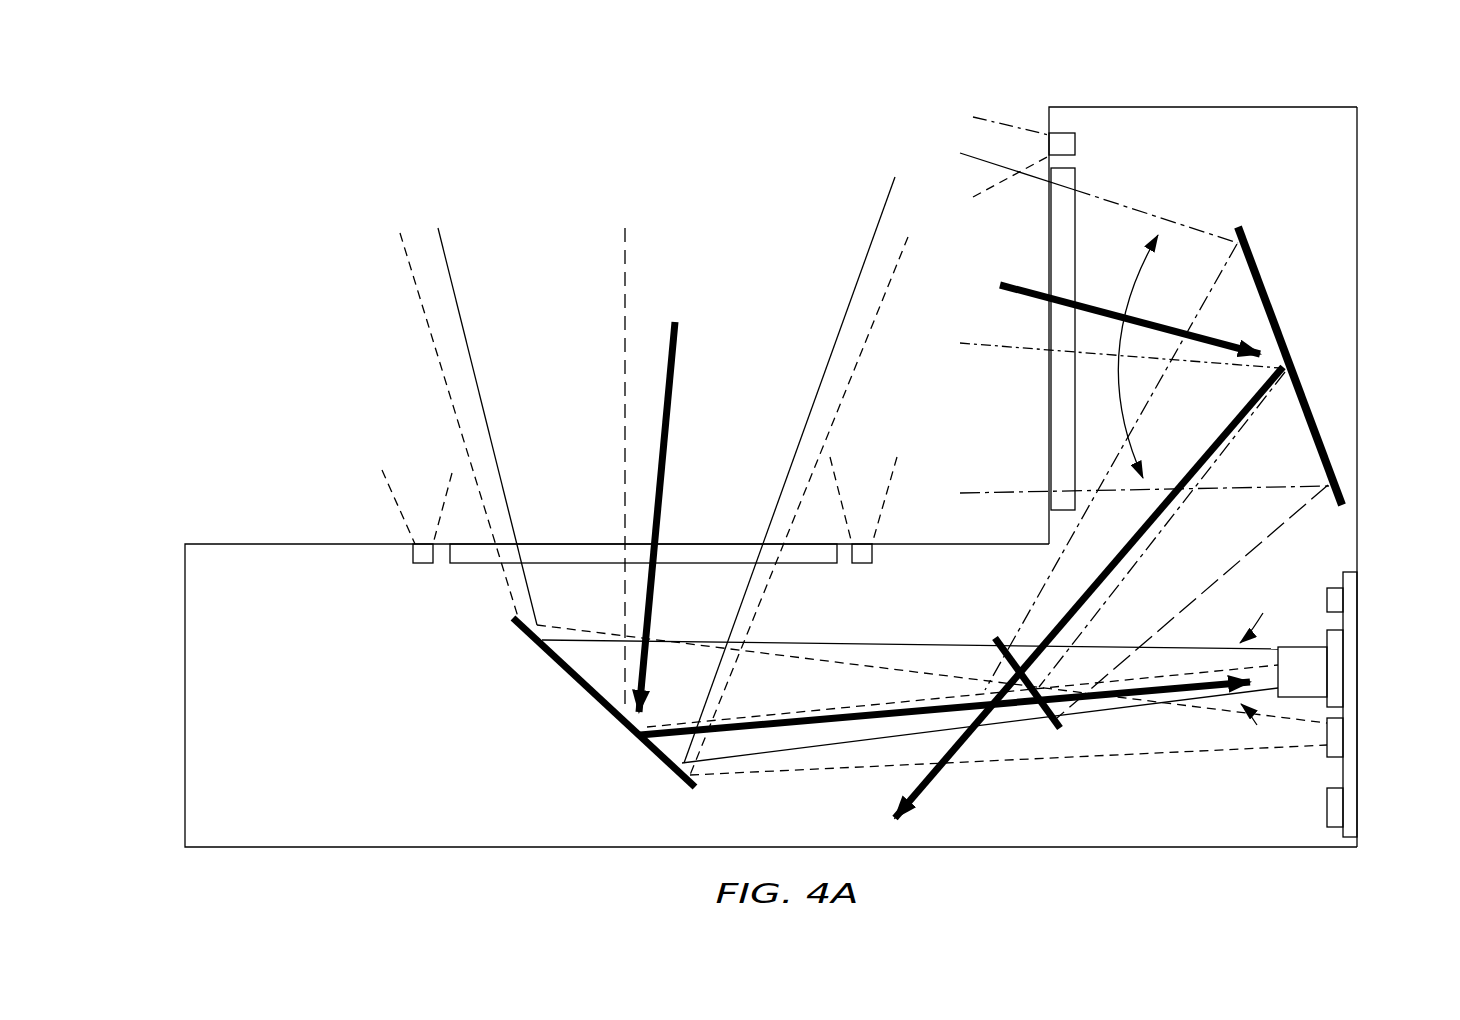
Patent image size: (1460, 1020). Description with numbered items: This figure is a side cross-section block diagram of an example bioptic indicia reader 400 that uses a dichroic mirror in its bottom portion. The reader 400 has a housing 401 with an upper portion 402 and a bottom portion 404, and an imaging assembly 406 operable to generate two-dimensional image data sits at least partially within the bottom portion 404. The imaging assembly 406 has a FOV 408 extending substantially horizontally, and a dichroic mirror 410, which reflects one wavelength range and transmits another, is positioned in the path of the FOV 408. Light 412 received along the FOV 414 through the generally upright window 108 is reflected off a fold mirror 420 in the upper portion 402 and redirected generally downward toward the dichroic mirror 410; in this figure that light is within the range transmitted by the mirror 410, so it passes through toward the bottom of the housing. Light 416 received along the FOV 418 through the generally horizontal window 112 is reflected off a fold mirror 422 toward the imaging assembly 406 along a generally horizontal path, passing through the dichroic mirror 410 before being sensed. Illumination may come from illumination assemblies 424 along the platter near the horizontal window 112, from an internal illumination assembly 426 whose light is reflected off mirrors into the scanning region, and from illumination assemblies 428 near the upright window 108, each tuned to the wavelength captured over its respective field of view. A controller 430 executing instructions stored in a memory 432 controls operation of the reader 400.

The bioptic indicia reader 400 is at (166, 98).
The housing 401 is at (1357, 272).
The upper portion 402 is at (1203, 107).
The bottom portion 404 is at (185, 695).
The imaging assembly 406 is at (1315, 670).
The FOV 408 is at (1264, 654).
The dichroic mirror 410 is at (993, 637).
The light 412 is at (1020, 285).
The FOV 414 is at (1127, 356).
The light 416 is at (673, 403).
The FOV 418 is at (458, 247).
The fold mirror 420 is at (1258, 267).
The fold mirror 422 is at (573, 680).
The illumination assemblies 424 is at (423, 563).
The internal illumination assembly 426 is at (1335, 735).
The illumination assemblies 428 is at (1067, 140).
The controller 430 is at (1335, 803).
The memory 432 is at (1335, 598).
The generally upright window 108 is at (1075, 175).
The generally horizontal window 112 is at (805, 565).